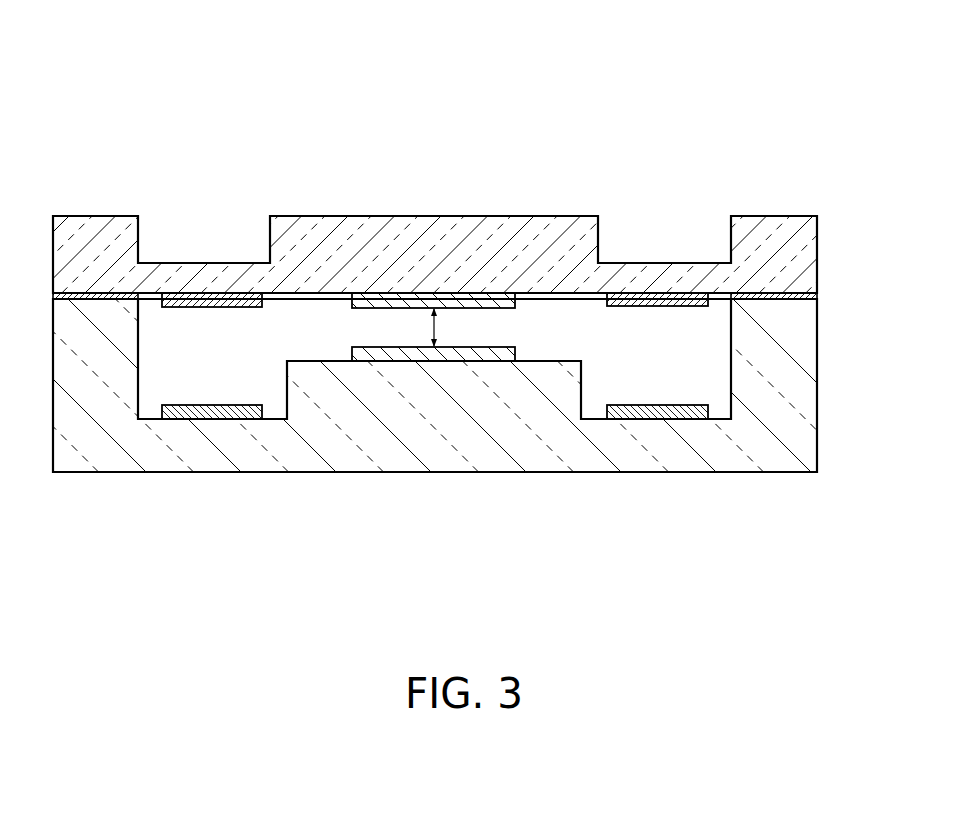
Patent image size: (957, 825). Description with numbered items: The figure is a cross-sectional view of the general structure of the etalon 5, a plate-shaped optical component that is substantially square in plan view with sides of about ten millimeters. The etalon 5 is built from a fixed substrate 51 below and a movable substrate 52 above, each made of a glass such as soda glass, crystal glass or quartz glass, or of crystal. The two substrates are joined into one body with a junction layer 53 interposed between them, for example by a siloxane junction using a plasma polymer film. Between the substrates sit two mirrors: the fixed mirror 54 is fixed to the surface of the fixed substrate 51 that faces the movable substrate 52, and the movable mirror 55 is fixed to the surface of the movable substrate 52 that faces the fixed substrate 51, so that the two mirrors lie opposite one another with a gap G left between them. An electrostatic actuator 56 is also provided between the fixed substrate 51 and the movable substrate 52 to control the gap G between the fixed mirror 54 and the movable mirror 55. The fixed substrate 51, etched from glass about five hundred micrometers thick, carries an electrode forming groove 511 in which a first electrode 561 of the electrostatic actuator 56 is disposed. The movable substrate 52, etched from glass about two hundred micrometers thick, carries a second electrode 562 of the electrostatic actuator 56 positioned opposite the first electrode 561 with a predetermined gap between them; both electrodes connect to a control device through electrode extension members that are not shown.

The etalon 5 is at (496, 85).
The fixed substrate 51 is at (806, 360).
The electrode forming groove 511 is at (140, 397).
The movable substrate 52 is at (806, 257).
The junction layer 53 is at (810, 294).
The fixed mirror 54 is at (492, 358).
The movable mirror 55 is at (483, 300).
The electrostatic actuator 56 is at (312, 549).
The first electrode 561 is at (193, 413).
The second electrode 562 is at (258, 307).
The gap G is at (424, 327).